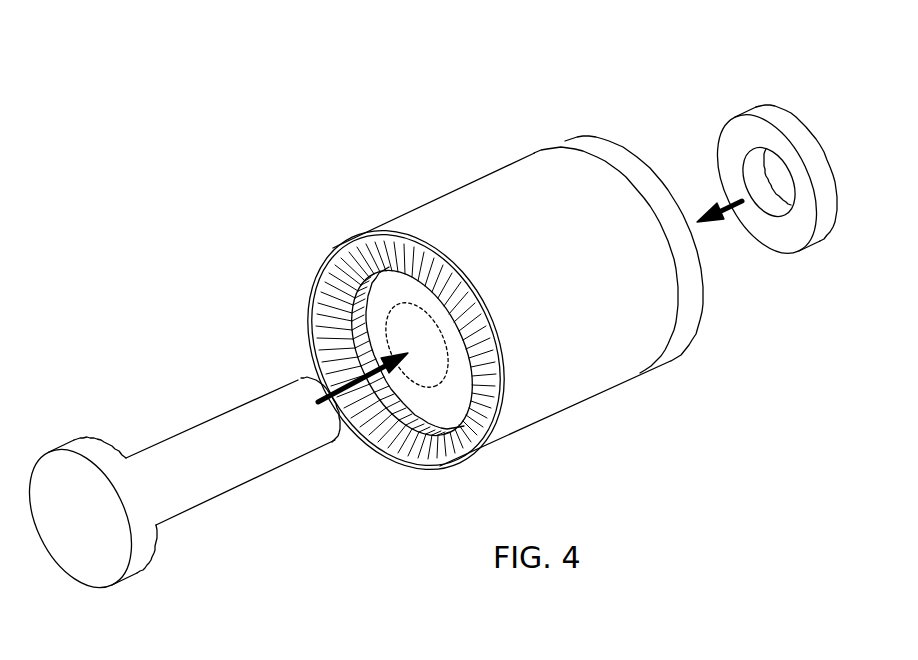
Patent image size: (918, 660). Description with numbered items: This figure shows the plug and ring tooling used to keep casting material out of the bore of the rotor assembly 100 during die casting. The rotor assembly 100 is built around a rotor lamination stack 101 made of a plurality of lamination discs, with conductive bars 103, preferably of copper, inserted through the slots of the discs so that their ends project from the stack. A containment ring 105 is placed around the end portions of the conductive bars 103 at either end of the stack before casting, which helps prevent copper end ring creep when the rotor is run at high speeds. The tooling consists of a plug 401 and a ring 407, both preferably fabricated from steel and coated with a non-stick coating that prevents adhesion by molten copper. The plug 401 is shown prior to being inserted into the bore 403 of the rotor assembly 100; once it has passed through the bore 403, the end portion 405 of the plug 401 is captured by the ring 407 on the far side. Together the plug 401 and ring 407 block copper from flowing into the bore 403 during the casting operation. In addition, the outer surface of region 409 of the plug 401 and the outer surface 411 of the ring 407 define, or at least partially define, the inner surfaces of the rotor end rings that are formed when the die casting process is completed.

The rotor assembly 100 is at (358, 182).
The rotor lamination stack 101 is at (573, 294).
The conductive bars 103 is at (412, 466).
The containment ring 105 is at (375, 237).
The plug 401 is at (217, 440).
The bore 403 is at (410, 338).
The end portion 405 is at (300, 385).
The ring 407 is at (777, 237).
The region 409 is at (142, 549).
The outer surface 411 is at (793, 118).